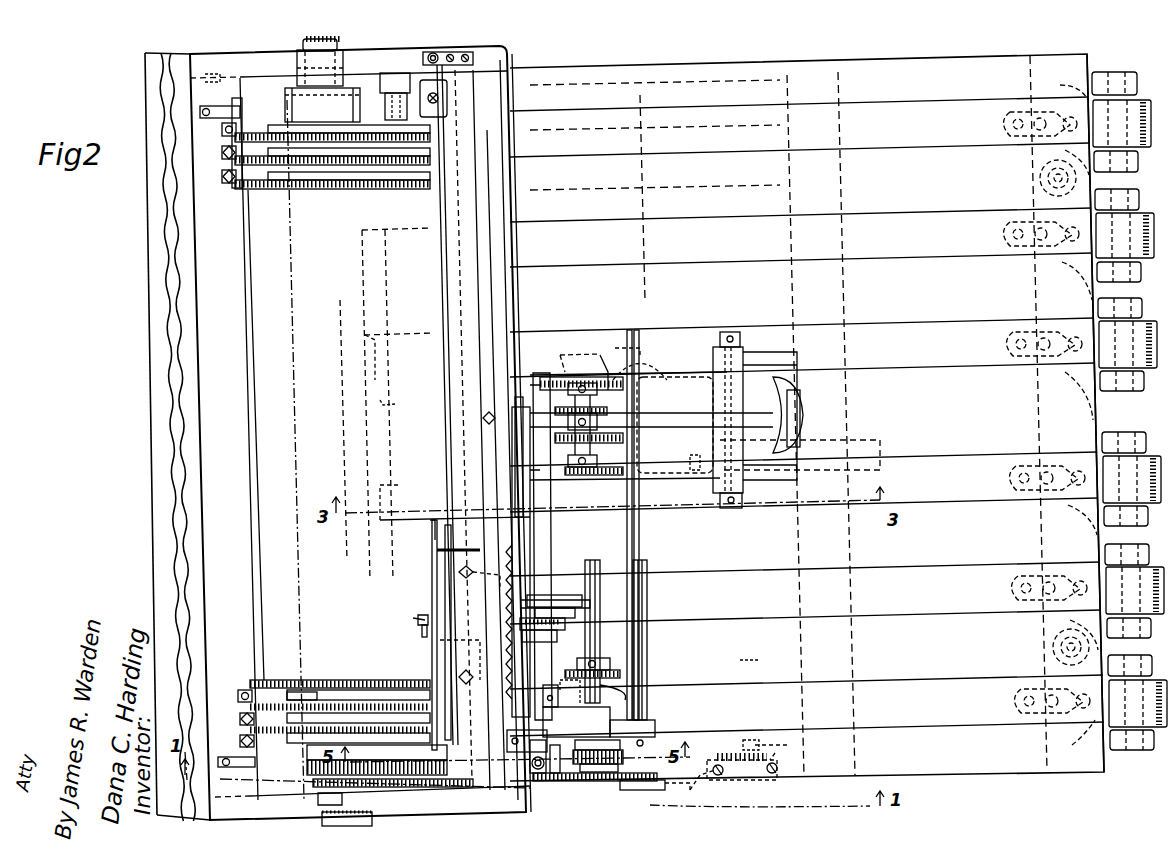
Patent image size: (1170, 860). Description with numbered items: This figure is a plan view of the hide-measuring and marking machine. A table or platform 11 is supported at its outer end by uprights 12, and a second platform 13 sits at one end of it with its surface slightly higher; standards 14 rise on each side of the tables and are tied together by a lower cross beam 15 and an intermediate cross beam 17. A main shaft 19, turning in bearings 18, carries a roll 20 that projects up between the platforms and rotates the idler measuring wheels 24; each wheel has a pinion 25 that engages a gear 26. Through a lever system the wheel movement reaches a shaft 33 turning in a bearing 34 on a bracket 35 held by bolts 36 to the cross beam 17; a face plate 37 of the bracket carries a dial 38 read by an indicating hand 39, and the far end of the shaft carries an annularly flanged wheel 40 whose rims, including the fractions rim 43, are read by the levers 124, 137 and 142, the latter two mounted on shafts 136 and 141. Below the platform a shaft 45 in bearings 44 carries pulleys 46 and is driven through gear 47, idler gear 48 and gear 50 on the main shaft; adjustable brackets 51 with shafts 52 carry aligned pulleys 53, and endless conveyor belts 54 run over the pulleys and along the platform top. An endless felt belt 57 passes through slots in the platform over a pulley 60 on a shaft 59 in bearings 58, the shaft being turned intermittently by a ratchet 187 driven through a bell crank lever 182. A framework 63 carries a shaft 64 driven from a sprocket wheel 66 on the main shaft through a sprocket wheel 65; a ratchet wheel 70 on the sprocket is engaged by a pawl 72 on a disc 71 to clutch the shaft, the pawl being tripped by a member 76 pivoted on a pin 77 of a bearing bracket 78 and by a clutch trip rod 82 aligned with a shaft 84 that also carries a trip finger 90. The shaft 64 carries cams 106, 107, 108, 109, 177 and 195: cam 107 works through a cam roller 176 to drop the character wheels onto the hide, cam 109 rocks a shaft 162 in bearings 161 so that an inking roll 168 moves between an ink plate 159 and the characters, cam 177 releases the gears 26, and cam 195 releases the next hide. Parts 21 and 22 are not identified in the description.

The table or platform 11 is at (950, 58).
The uprights 12 is at (1040, 179).
The second platform or table 13 is at (152, 300).
The standards 14 is at (222, 66).
The cross beam 15 is at (203, 214).
The cross beam 17 is at (470, 216).
The bearings 18 is at (297, 83).
The shaft 19 is at (303, 46).
The roll 20 is at (285, 113).
The bracket 21 is at (245, 690).
The bar 22 is at (280, 690).
The idler measuring wheel 24 is at (318, 188).
The pinion 25 is at (350, 185).
The gear 26 is at (290, 200).
The shaft 33 is at (459, 574).
The bearing 34 is at (466, 677).
The bracket 35 is at (445, 565).
The bolts 36 is at (440, 620).
The face plate 37 is at (432, 547).
The dial 38 is at (430, 527).
The indicating hand 39 is at (418, 620).
The annularly flanged wheel 40 is at (530, 565).
The rim 43 is at (392, 790).
The bearings 44 is at (385, 80).
The shaft 45 is at (380, 403).
The pulleys 46 is at (365, 335).
The gear 47 is at (425, 790).
The idler gear 48 is at (356, 790).
The gear 50 is at (307, 772).
The brackets 51 is at (1093, 72).
The shaft 52 is at (1122, 80).
The pulley 53 is at (1075, 85).
The endless conveyor belts 54 is at (940, 212).
The endless belt 57 is at (675, 395).
The bearings 58 is at (808, 473).
The shaft 59 is at (752, 656).
The pulley 60 is at (690, 345).
The framework 63 is at (628, 350).
The shaft 64 is at (602, 640).
The sprocket wheel 65 is at (700, 765).
The sprocket wheel 66 is at (313, 788).
The ratchet wheel 70 is at (625, 755).
The plate or disc 71 is at (615, 725).
The pawl 72 is at (630, 782).
The member 76 is at (560, 785).
The pin 77 is at (540, 782).
The bearing bracket 78 is at (520, 740).
The clutch trip rod 82 is at (671, 640).
The rod or shaft 84 is at (640, 380).
The trip finger 90 is at (653, 348).
The cam 106 is at (640, 520).
The cam 107 is at (605, 450).
The cam 108 is at (600, 370).
The cam 109 is at (555, 377).
The lever 124 is at (555, 620).
The shaft 136 is at (520, 483).
The lever 137 is at (565, 630).
The shaft 141 is at (515, 445).
The lever 142 is at (540, 592).
The circular plate 159 is at (800, 390).
The bearings 161 is at (735, 340).
The shaft 162 is at (750, 365).
The inking roll 168 is at (802, 417).
The cam roller 176 is at (560, 700).
The cam 177 is at (605, 690).
The bell crank lever 182 is at (642, 790).
The ratchet 187 is at (795, 748).
The cam 195 is at (600, 520).